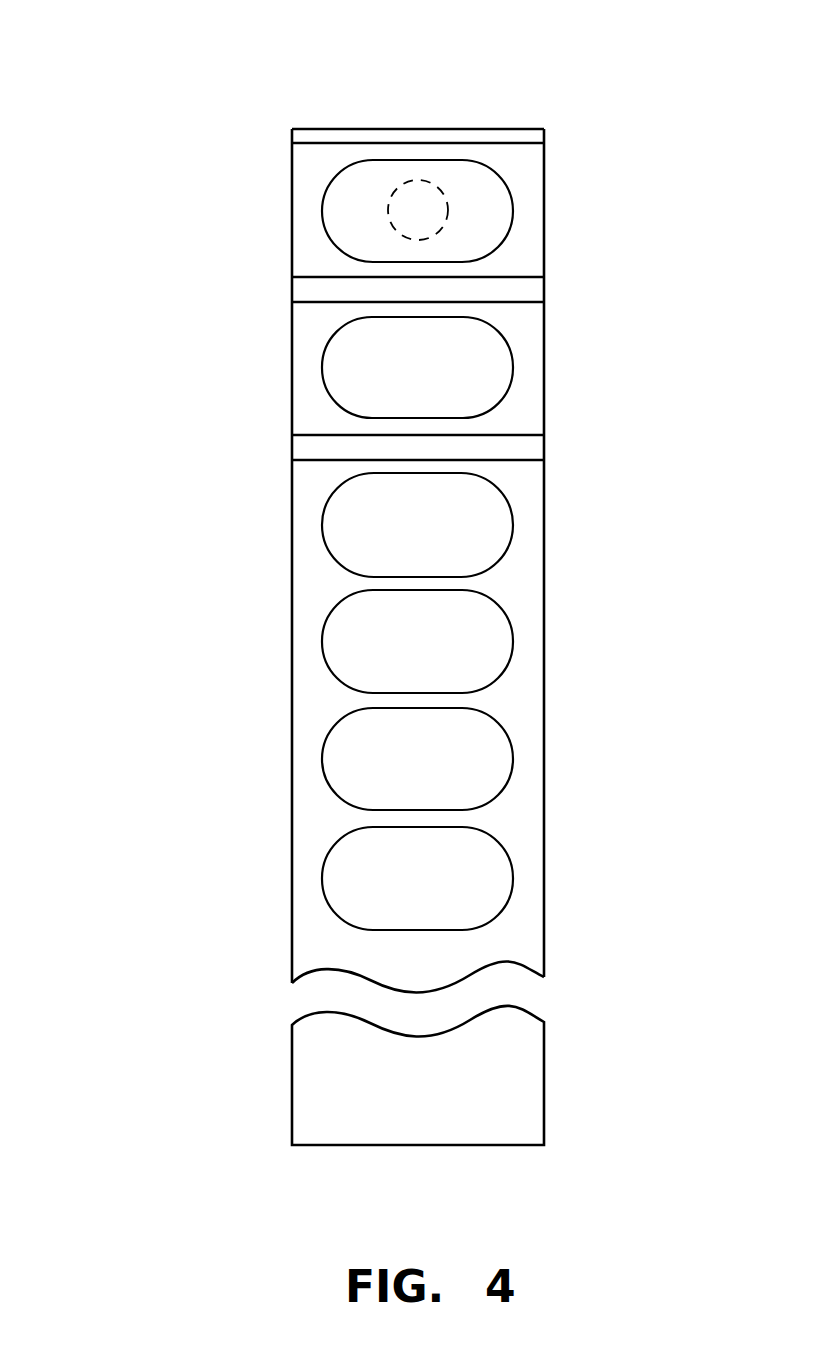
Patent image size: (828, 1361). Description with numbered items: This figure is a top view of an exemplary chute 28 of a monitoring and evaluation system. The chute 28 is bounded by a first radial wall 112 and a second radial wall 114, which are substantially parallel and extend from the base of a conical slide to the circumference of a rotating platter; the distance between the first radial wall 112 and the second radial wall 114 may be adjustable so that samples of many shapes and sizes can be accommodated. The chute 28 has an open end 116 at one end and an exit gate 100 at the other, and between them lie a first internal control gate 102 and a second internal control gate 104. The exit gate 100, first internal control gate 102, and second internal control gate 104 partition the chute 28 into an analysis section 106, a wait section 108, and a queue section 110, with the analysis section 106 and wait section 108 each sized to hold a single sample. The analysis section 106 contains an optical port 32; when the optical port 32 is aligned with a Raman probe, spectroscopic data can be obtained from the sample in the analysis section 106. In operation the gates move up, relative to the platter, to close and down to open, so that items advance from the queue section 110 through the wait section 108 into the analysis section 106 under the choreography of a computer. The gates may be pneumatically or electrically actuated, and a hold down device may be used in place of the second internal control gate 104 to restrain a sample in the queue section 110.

The chute 28 is at (187, 1055).
The exit gate 100 is at (408, 136).
The optical port 32 is at (418, 203).
The first internal control gate 102 is at (530, 288).
The second internal control gate 104 is at (530, 445).
The analysis section 106 is at (308, 253).
The wait section 108 is at (308, 410).
The queue section 110 is at (308, 582).
The first radial wall 112 is at (292, 770).
The second radial wall 114 is at (544, 765).
The open end 116 is at (400, 1128).